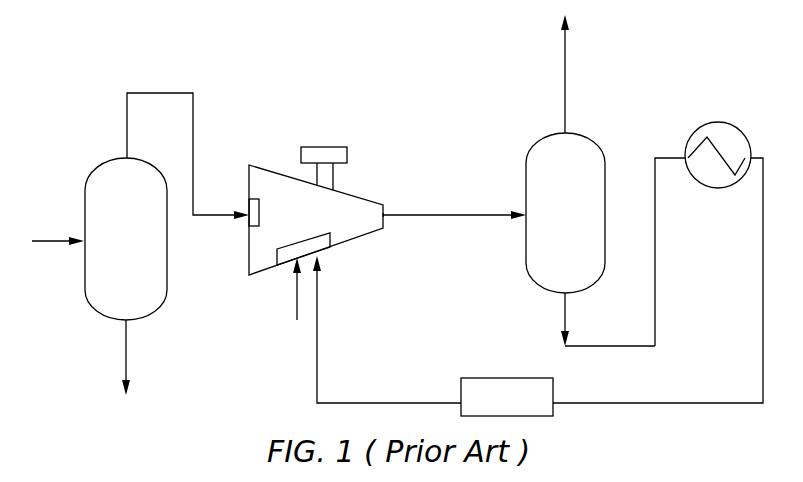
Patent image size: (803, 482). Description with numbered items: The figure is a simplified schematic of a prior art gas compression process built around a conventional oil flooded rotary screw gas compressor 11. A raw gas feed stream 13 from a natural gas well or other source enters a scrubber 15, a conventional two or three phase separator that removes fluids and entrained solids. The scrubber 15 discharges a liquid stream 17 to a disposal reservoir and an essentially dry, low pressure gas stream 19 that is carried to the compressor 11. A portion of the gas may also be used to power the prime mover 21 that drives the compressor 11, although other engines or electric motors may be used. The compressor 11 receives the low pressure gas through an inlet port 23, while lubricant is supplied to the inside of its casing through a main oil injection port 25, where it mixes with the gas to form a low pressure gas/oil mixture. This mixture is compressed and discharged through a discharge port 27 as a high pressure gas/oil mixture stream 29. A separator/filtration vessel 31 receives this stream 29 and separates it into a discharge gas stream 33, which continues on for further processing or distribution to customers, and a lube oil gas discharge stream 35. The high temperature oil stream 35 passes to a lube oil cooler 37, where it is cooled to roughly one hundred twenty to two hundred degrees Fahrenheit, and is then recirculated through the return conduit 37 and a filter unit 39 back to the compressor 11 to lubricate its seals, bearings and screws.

The rotary screw gas compressor 11 is at (348, 190).
The raw gas feed stream 13 is at (44, 241).
The scrubber 15 is at (157, 265).
The liquid stream 17 is at (127, 347).
The low pressure gas stream 19 is at (195, 118).
The prime mover 21 is at (335, 152).
The inlet port 23 is at (247, 222).
The main oil injection port 25 is at (297, 320).
The discharge port 27 is at (383, 207).
The high pressure gas/oil mixture stream 29 is at (447, 214).
The separator/filtration vessel 31 is at (600, 152).
The discharge gas stream 33 is at (563, 57).
The lube oil gas discharge stream 35 is at (630, 347).
The lube oil cooler 37 is at (710, 122).
The filter unit 39 is at (517, 416).